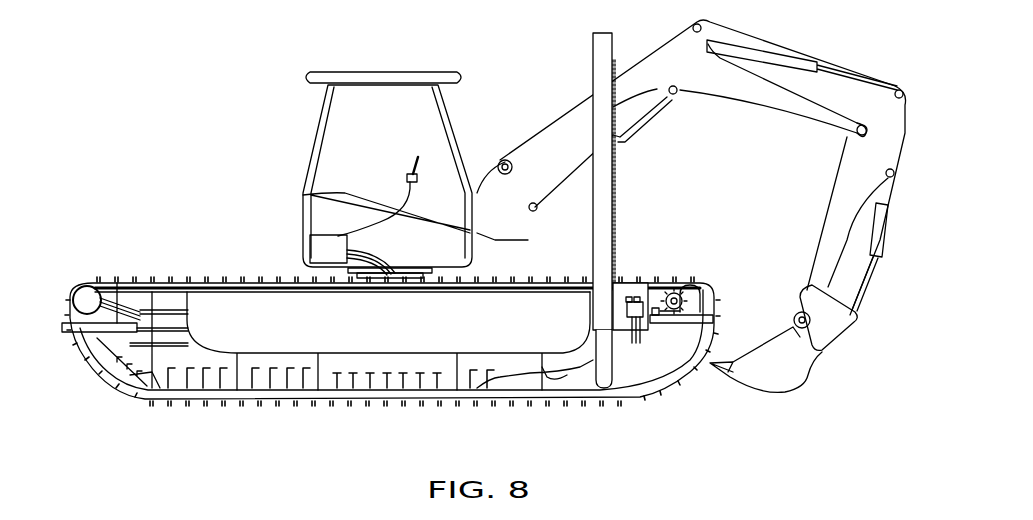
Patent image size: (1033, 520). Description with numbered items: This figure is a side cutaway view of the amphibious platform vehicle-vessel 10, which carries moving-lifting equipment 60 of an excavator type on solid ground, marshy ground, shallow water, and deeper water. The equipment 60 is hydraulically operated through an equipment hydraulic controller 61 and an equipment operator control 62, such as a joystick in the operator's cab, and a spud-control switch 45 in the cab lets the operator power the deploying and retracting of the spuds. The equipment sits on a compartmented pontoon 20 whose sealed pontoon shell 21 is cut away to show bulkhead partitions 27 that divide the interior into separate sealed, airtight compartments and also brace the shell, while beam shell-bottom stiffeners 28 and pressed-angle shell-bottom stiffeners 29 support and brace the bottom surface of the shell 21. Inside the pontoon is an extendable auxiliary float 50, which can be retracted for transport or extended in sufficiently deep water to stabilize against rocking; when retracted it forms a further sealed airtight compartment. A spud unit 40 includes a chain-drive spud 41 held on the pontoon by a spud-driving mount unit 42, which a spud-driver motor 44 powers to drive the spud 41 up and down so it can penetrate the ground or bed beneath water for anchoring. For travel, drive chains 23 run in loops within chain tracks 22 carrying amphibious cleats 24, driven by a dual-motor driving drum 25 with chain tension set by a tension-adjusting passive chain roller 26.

The amphibious platform vehicle-vessel 10 is at (125, 55).
The compartmented pontoon 20 is at (70, 268).
The sealed pontoon shell 21 is at (83, 352).
The chain track 22 is at (101, 378).
The drive chain 23 is at (677, 290).
The amphibious cleat 24 is at (690, 283).
The dual-motor driving drum 25 is at (80, 300).
The tension-adjusting passive chain roller 26 is at (705, 303).
The bulkhead partition 27 is at (152, 380).
The beam shell-bottom stiffener 28 is at (368, 385).
The pressed-angle shell-bottom stiffener 29 is at (262, 385).
The spud unit 40 is at (617, 427).
The chain-drive spud 41 is at (602, 378).
The spud-driving mount unit 42 is at (617, 330).
The spud-driver motor 44 is at (640, 318).
The spud-control switch 45 is at (413, 160).
The extendable auxiliary float 50 is at (431, 323).
The moving-lifting equipment 60 is at (517, 68).
The equipment hydraulic controller 61 is at (318, 245).
The equipment operator control 62 is at (407, 178).